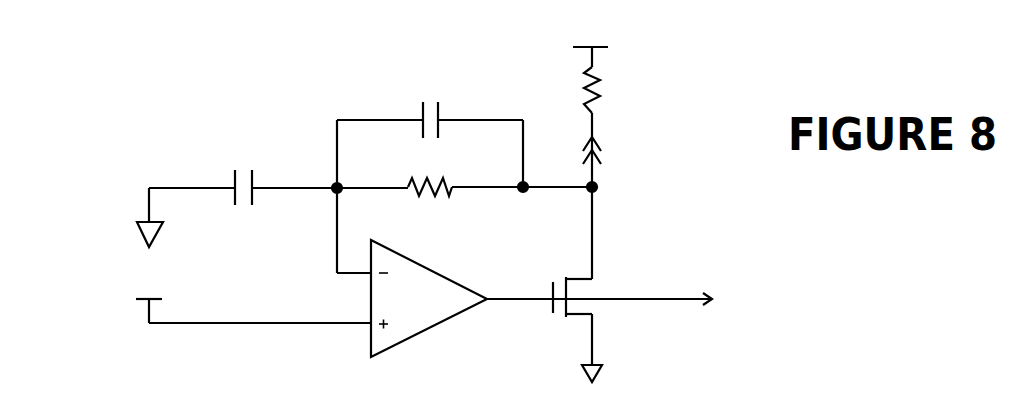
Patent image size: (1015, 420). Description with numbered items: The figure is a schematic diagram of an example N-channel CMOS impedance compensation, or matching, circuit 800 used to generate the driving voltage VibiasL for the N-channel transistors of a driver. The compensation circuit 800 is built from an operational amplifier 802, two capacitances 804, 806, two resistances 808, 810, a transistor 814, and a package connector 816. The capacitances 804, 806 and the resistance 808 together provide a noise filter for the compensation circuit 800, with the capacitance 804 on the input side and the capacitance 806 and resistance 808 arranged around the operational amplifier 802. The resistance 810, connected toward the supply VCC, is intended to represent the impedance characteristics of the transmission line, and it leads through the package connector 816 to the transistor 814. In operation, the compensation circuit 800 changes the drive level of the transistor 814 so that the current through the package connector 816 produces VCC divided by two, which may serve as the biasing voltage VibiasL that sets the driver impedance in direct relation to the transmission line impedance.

The impedance compensation circuit 800 is at (835, 215).
The operational amplifier 802 is at (422, 332).
The capacitance 804 is at (252, 178).
The capacitance 806 is at (439, 113).
The resistance 808 is at (452, 187).
The resistance 810 is at (600, 90).
The transistor 814 is at (568, 318).
The package connector 816 is at (600, 148).